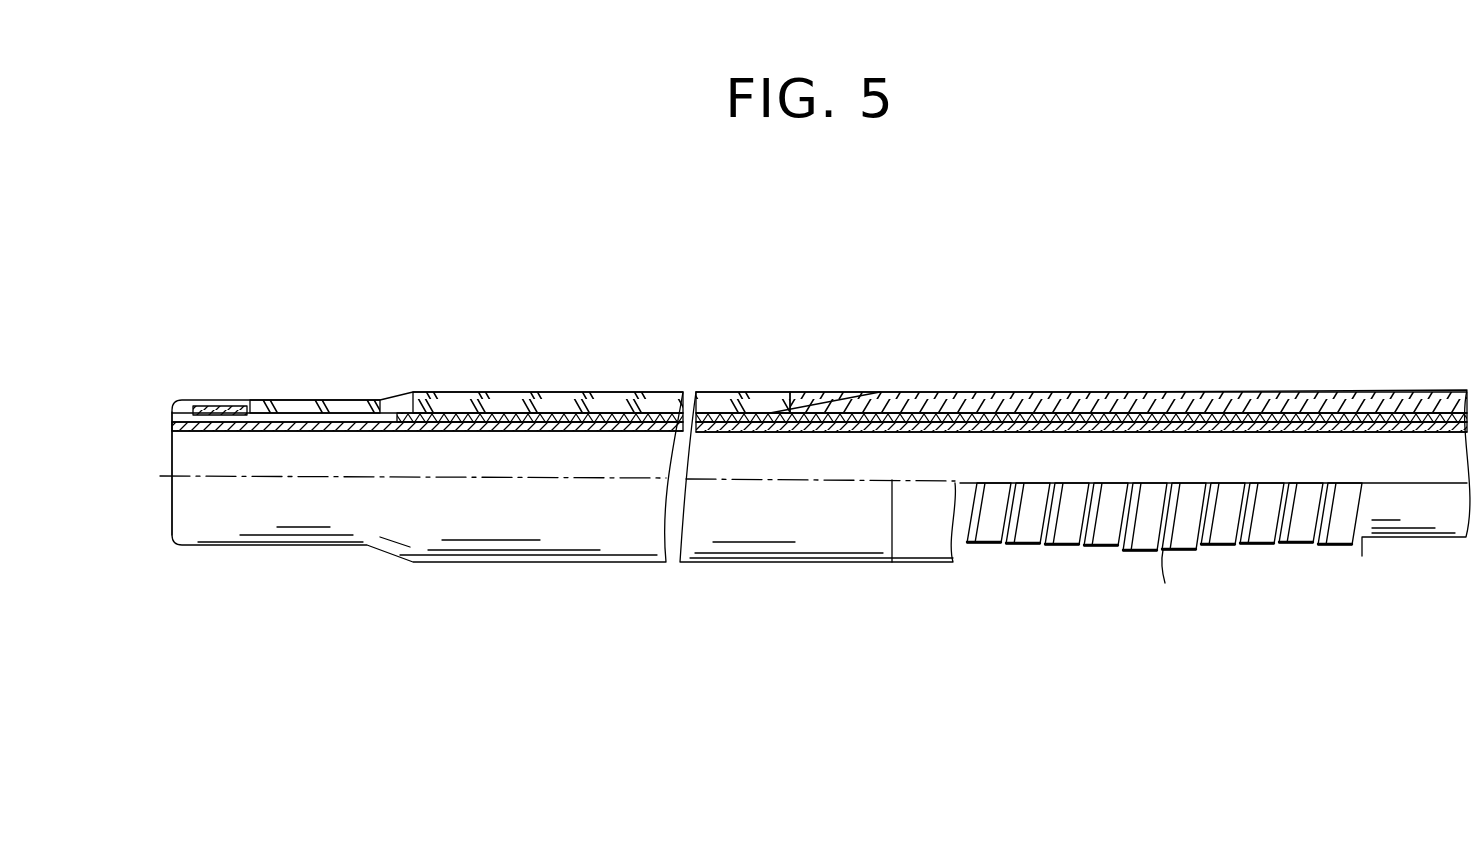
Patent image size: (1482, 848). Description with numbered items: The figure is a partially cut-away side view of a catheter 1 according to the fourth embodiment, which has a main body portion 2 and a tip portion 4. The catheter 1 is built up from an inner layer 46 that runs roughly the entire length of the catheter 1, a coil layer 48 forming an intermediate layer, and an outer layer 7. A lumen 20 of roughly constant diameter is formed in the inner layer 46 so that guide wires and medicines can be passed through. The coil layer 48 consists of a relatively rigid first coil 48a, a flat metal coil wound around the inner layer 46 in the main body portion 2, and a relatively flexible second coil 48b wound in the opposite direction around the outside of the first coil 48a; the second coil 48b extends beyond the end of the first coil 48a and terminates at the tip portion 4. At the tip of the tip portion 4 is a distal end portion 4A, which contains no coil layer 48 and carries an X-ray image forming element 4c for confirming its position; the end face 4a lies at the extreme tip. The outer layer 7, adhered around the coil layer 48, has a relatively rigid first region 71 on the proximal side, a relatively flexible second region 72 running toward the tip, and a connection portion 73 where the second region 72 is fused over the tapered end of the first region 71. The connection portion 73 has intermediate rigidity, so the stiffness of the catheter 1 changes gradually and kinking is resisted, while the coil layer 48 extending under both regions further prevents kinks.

The catheter 1 is at (1104, 238).
The main body portion 2 is at (1250, 606).
The tip portion 4 is at (545, 596).
The tube end 4a is at (168, 438).
The X-ray image forming element 4c is at (198, 406).
The distal end portion 4A is at (300, 398).
The lumen 20 is at (250, 460).
The outer layer 7 is at (1035, 300).
The first region 71 is at (1005, 395).
The second region 72 is at (640, 395).
The connection portion 73 is at (765, 385).
The inner layer 46 is at (862, 430).
The coil layer 48 is at (1387, 290).
The first coil 48a is at (1305, 392).
The second coil 48b is at (1188, 392).